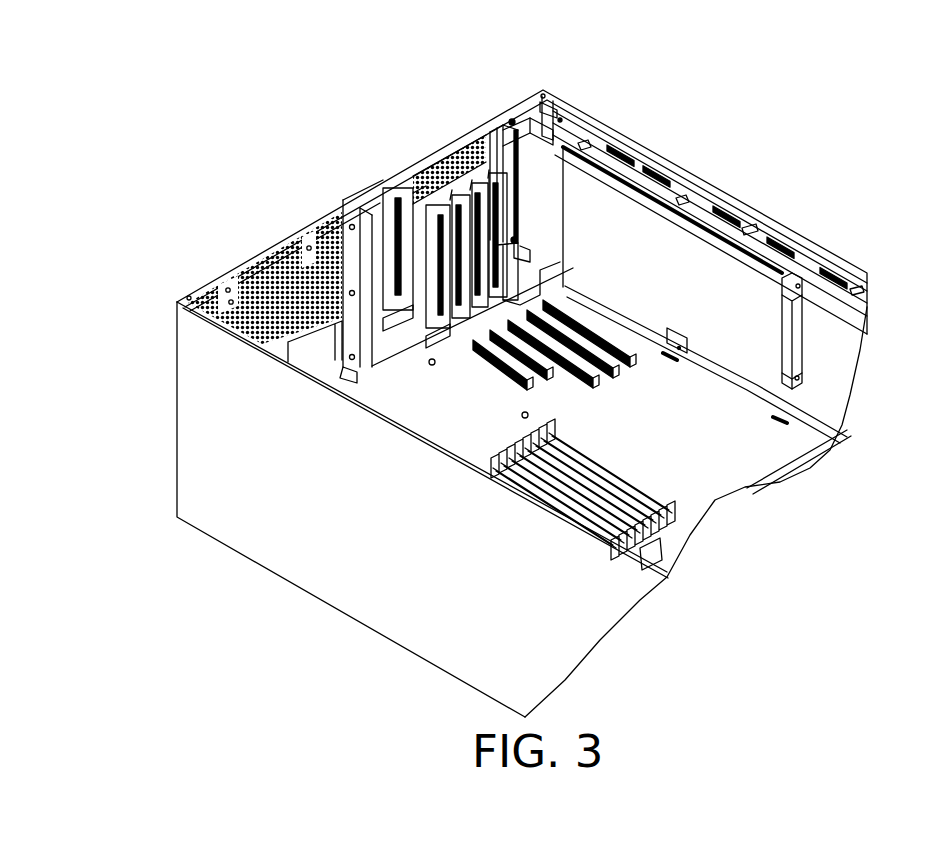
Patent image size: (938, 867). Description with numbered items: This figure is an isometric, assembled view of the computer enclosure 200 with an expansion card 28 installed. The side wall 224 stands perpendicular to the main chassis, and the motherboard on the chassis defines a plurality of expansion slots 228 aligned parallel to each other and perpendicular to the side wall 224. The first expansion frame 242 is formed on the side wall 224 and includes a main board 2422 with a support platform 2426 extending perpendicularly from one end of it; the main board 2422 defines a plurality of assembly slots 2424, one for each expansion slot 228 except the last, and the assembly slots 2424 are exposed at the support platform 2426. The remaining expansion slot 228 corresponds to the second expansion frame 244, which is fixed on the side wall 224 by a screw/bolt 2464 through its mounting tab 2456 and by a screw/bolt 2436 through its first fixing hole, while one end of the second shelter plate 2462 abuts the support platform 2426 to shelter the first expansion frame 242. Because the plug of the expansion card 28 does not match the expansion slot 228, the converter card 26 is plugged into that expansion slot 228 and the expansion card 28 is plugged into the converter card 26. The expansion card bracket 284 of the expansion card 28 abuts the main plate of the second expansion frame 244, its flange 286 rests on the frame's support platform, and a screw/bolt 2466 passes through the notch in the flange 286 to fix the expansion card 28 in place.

The computer enclosure 200 is at (250, 147).
The side wall 224 is at (220, 282).
The assembly slots 2424 is at (440, 283).
The main board 2422 is at (400, 205).
The first expansion frame 242 is at (413, 173).
The second expansion frame 244 is at (490, 172).
The second shelter plate 2462 is at (492, 130).
The mounting tab 2456 is at (500, 130).
The screw/bolt 2464 is at (508, 122).
The flange 286 is at (514, 119).
The screw/bolt 2466 is at (548, 110).
The expansion card bracket 284 is at (550, 126).
The support platform 2426 is at (516, 182).
The screw/bolt 2436 is at (514, 240).
The expansion card 28 is at (712, 275).
The converter card 26 is at (715, 357).
The expansion slots 228 is at (560, 270).